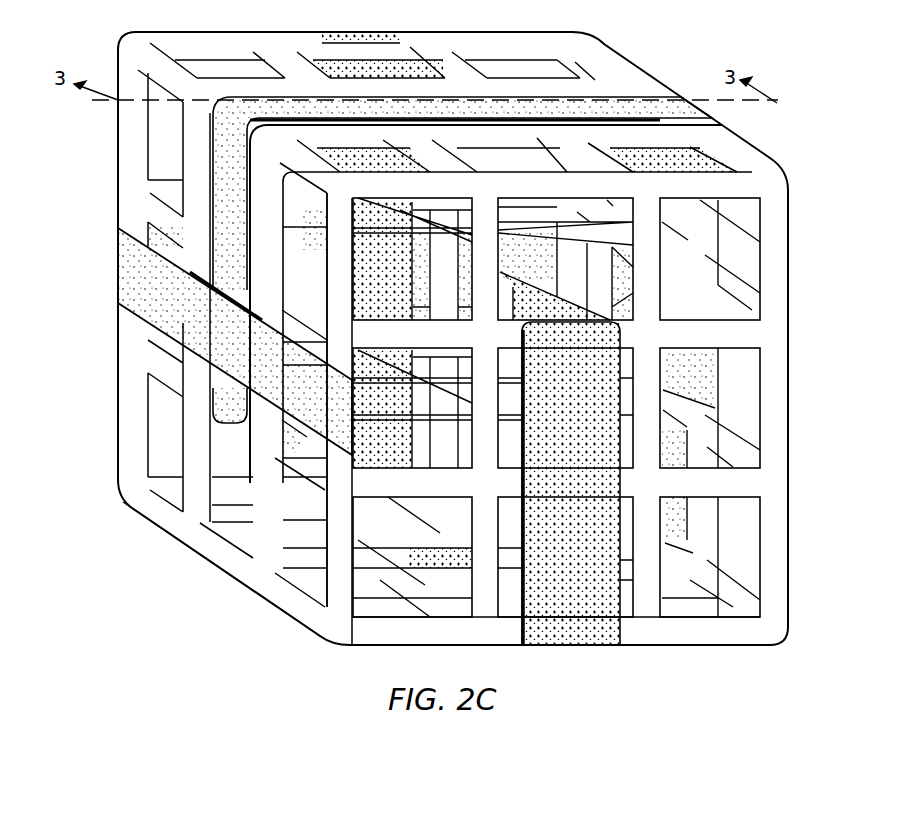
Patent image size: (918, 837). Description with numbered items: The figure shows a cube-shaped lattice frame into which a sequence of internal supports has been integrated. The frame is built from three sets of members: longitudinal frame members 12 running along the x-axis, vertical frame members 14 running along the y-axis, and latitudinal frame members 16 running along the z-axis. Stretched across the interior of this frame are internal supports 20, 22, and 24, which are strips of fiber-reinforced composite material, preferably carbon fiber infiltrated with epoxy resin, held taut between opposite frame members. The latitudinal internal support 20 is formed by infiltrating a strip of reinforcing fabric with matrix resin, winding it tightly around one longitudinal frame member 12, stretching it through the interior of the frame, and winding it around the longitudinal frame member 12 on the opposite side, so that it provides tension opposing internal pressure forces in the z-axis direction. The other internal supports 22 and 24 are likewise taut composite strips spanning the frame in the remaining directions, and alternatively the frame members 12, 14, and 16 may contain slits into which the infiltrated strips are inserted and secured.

The longitudinal frame member 12 is at (744, 628).
The vertical frame member 14 is at (339, 600).
The latitudinal frame member 16 is at (272, 594).
The latitudinal internal support 20 is at (582, 628).
The internal support 22 is at (628, 110).
The internal support 24 is at (150, 292).